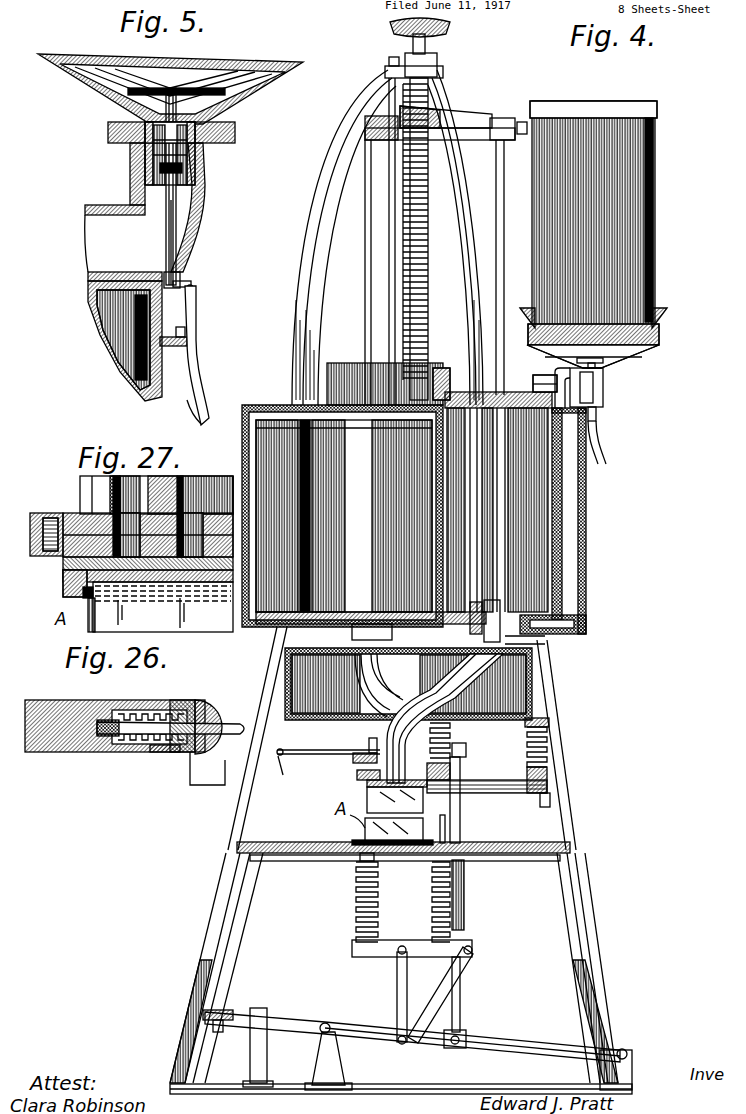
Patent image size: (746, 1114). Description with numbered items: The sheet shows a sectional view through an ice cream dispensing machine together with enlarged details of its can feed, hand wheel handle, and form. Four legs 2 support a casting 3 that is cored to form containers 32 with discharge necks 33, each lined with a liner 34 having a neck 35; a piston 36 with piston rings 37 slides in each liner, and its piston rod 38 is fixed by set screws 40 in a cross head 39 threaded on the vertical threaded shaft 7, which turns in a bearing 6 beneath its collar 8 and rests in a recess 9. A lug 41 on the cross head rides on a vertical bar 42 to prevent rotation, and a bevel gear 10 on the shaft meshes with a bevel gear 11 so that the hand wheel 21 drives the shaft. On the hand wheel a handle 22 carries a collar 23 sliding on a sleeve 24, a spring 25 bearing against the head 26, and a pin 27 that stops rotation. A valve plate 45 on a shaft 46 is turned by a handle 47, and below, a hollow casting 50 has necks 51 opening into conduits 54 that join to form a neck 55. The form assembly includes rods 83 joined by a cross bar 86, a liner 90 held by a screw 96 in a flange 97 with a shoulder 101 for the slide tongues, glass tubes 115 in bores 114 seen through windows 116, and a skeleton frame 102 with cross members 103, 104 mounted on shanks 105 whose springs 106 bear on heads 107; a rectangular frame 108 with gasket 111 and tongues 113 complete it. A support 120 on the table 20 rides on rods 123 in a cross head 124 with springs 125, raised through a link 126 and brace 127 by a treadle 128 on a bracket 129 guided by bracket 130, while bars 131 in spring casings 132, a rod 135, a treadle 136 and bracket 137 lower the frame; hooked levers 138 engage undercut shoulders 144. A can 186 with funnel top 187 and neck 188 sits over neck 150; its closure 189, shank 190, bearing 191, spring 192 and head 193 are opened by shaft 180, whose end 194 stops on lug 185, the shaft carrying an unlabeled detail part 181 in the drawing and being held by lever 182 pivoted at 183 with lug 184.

In FIG. 4, the legs 2 is at (240, 820).
In FIG. 4, the casting 3 is at (586, 548).
In FIG. 4, the bearing 6 is at (437, 62).
In FIG. 4, the vertical threaded shaft 7 is at (425, 44).
In FIG. 4, the collar 8 is at (430, 80).
In FIG. 4, the recess 9 is at (400, 428).
In FIG. 4, the bevel gear 10 is at (404, 30).
In FIG. 4, the bevel gear 11 is at (285, 655).
In FIG. 4, the table 20 is at (525, 855).
In FIG. 26, the hand wheel 21 is at (218, 705).
In FIG. 26, the handle 22 is at (62, 712).
In FIG. 26, the collar 23 is at (182, 705).
In FIG. 26, the sleeve 24 is at (190, 770).
In FIG. 26, the spring 25 is at (160, 752).
In FIG. 26, the head 26 is at (120, 745).
In FIG. 26, the pin 27 is at (235, 727).
In FIG. 4, the containers 32 is at (562, 507).
In FIG. 4, the discharge necks 33 is at (455, 622).
In FIG. 4, the liners 34 is at (480, 500).
In FIG. 4, the neck 35 is at (500, 600).
In FIG. 4, the pistons 36 is at (540, 376).
In FIG. 4, the piston rings 37 is at (440, 380).
In FIG. 4, the piston rods 38 is at (372, 265).
In FIG. 4, the cross head 39 is at (470, 118).
In FIG. 4, the set screws 40 is at (522, 122).
In FIG. 4, the lug 41 is at (392, 140).
In FIG. 4, the vertical bar 42 is at (393, 210).
In FIG. 4, the valve plate 45 is at (474, 602).
In FIG. 4, the shaft 46 is at (586, 618).
In FIG. 4, the handle 47 is at (546, 640).
In FIG. 4, the hollow casting 50 is at (526, 690).
In FIG. 4, the necks 51 is at (492, 620).
In FIG. 4, the conduits 54 is at (445, 718).
In FIG. 4, the neck 55 is at (385, 702).
In FIG. 4, the rods 83 is at (328, 755).
In FIG. 4, the cross bar 86 is at (291, 773).
In FIG. 27, the liner 90 is at (175, 505).
In FIG. 27, the screw 96 is at (75, 514).
In FIG. 27, the flange 97 is at (40, 513).
In FIG. 27, the shoulder 101 is at (80, 562).
In FIG. 4, the skeleton frame 102 is at (510, 794).
In FIG. 4, the cross member 103 is at (410, 797).
In FIG. 4, the cross member 104 is at (552, 806).
In FIG. 4, the shanks 105 is at (450, 750).
In FIG. 4, the spring 106 is at (548, 742).
In FIG. 4, the head 107 is at (549, 722).
In FIG. 27, the rectangular frame 108 is at (70, 584).
In FIG. 27, the gasket 111 is at (88, 620).
In FIG. 27, the tongues 113 is at (180, 585).
In FIG. 27, the bores 114 is at (190, 540).
In FIG. 27, the glass tubes 115 is at (165, 520).
In FIG. 27, the windows 116 is at (92, 476).
In FIG. 4, the support 120 is at (402, 856).
In FIG. 4, the vertical rods 123 is at (356, 890).
In FIG. 4, the cross head 124 is at (380, 945).
In FIG. 4, the springs 125 is at (356, 916).
In FIG. 4, the link 126 is at (397, 975).
In FIG. 4, the angular brace 127 is at (440, 990).
In FIG. 4, the treadle 128 is at (360, 1025).
In FIG. 4, the bracket 129 is at (328, 1022).
In FIG. 4, the guide bracket 130 is at (258, 1010).
In FIG. 4, the vertical bars 131 is at (480, 805).
In FIG. 4, the spring casings 132 is at (464, 903).
In FIG. 4, the rod 135 is at (460, 1010).
In FIG. 4, the treadle 136 is at (505, 1040).
In FIG. 4, the bracket 137 is at (625, 1068).
In FIG. 4, the hooked levers 138 is at (446, 832).
In FIG. 4, the undercut shoulders 144 is at (461, 780).
In FIG. 5, the necks 150 is at (200, 205).
In FIG. 4, the necks 150 is at (598, 400).
In FIG. 5, the vertical shaft 180 is at (177, 226).
In FIG. 5, the collar 181 is at (181, 272).
In FIG. 5, the operating and latching lever 182 is at (198, 358).
In FIG. 5, the pivot 183 is at (193, 286).
In FIG. 5, the lug 184 is at (185, 330).
In FIG. 5, the lug 185 is at (186, 398).
In FIG. 4, the lug 185 is at (603, 465).
In FIG. 4, the can 186 is at (657, 236).
In FIG. 5, the funnel shaped removable top 187 is at (272, 74).
In FIG. 4, the funnel shaped removable top 187 is at (625, 358).
In FIG. 5, the neck 188 is at (205, 160).
In FIG. 4, the neck 188 is at (604, 385).
In FIG. 5, the closure 189 is at (212, 60).
In FIG. 5, the shank 190 is at (166, 104).
In FIG. 5, the bearing 191 is at (108, 128).
In FIG. 5, the spring 192 is at (148, 150).
In FIG. 5, the head 193 is at (160, 168).
In FIG. 5, the end 194 is at (191, 282).